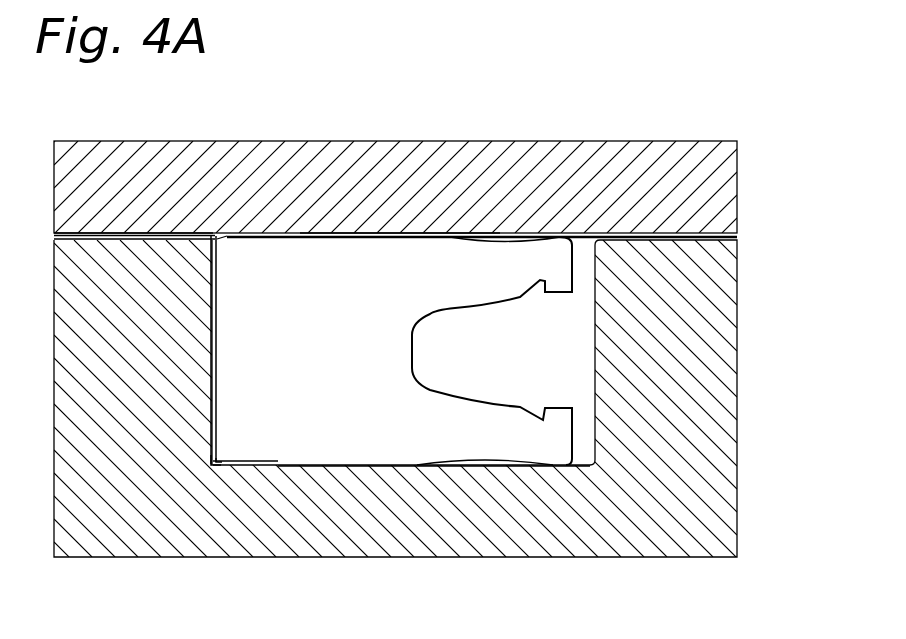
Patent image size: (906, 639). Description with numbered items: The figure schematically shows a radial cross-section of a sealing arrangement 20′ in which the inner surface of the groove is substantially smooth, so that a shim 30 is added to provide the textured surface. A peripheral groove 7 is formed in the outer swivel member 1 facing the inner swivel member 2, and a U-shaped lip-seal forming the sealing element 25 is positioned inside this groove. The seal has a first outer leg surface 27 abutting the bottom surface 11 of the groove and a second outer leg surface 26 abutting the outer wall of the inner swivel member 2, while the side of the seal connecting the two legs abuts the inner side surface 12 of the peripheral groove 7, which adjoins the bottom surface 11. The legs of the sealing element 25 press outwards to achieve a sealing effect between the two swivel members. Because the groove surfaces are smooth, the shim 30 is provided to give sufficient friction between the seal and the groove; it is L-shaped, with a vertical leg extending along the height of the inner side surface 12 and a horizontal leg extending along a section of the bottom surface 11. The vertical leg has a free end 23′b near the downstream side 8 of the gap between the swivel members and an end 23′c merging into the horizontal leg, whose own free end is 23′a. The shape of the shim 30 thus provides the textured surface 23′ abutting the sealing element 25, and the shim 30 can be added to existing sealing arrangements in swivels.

The outer swivel member 1 is at (307, 545).
The inner swivel member 2 is at (287, 180).
The peripheral groove 7 is at (562, 358).
The downstream side 8 is at (110, 236).
The bottom surface 11 is at (298, 468).
The inner side surface 12 is at (211, 363).
The sealing arrangement 20′ is at (387, 192).
The textured surface 23′ is at (217, 342).
The free end of horizontal leg 23′a is at (278, 463).
The free end of vertical leg 23′b is at (213, 235).
The end merging into horizontal leg 23′c is at (217, 462).
The sealing element 25 is at (457, 237).
The second outer leg surface 26 is at (455, 247).
The first outer leg surface 27 is at (353, 465).
The shim 30 is at (235, 466).